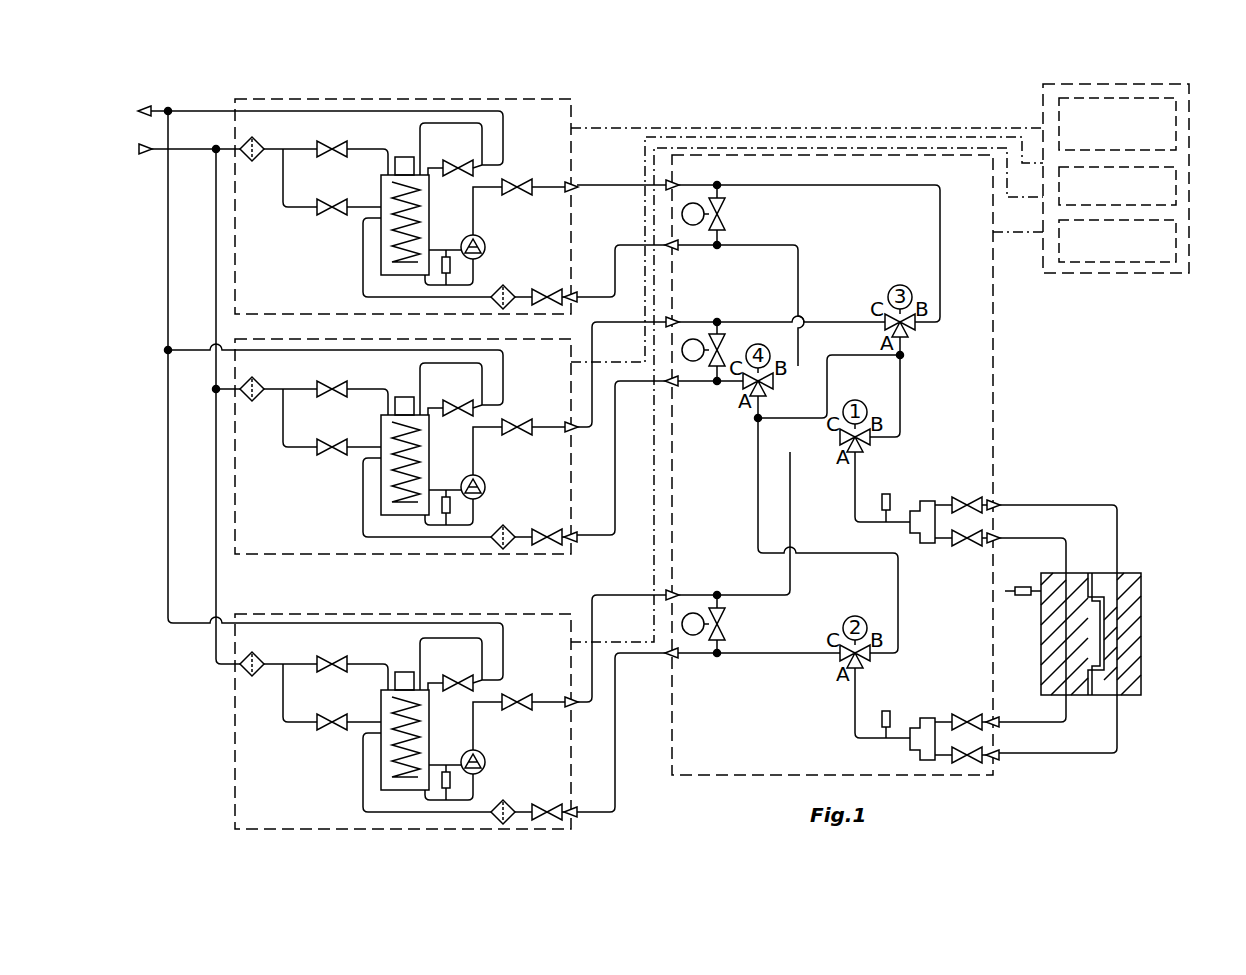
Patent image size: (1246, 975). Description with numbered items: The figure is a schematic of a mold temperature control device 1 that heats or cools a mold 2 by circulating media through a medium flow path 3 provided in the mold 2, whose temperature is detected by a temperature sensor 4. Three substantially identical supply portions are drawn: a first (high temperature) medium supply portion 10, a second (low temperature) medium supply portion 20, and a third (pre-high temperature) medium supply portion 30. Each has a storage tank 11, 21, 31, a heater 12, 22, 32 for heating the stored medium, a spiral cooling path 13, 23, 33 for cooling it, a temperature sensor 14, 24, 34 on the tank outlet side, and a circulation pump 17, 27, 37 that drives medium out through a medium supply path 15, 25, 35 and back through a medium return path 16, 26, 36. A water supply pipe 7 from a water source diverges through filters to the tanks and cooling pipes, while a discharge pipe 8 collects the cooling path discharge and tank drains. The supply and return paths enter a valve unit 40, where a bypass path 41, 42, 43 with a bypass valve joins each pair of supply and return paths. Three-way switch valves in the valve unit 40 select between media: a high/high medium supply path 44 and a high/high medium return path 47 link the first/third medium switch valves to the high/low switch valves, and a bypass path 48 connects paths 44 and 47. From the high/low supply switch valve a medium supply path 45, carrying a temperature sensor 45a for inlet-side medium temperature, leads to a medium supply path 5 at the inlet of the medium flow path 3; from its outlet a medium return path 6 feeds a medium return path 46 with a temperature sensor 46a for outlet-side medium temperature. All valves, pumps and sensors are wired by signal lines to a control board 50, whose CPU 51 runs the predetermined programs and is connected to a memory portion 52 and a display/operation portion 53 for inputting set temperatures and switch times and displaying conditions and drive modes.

The mold temperature control device 1 is at (192, 728).
The mold 2 is at (1157, 570).
The medium flow path 3 is at (1112, 697).
The temperature sensor 4 is at (1018, 598).
The medium supply path 5 is at (1027, 538).
The medium return path 6 is at (1027, 722).
The medium supply pipe line (water supply pipe) 7 is at (188, 154).
The medium discharge pipe line (discharge pipe) 8 is at (170, 124).
The first medium supply portion 10 is at (584, 97).
The storage tank 11 is at (332, 141).
The heater 12 is at (332, 199).
The cooling path 13 is at (458, 160).
The temperature sensor 14 is at (452, 265).
The medium supply path 15 is at (600, 185).
The medium return path 16 is at (602, 297).
The circulation pump 17 is at (485, 245).
The second medium supply portion 20 is at (445, 730).
The storage tank 21 is at (394, 708).
The heater 22 is at (365, 679).
The cooling path 23 is at (442, 731).
The temperature sensor 24 is at (477, 782).
The medium supply path 25 is at (610, 595).
The medium return path 26 is at (617, 760).
The circulation pump 27 is at (495, 747).
The third medium supply portion 30 is at (403, 472).
The storage tank 31 is at (394, 433).
The heater 32 is at (365, 404).
The cooling path 33 is at (442, 456).
The temperature sensor 34 is at (477, 507).
The medium supply path 35 is at (586, 429).
The medium return path 36 is at (600, 535).
The circulation pump 37 is at (495, 472).
The valve unit 40 is at (1010, 387).
The bypass path 41 is at (722, 190).
The bypass path 42 is at (722, 647).
The bypass path 43 is at (717, 376).
The high/high medium supply path 44 is at (903, 395).
The medium supply path 45 is at (855, 500).
The temperature sensor 45a is at (890, 494).
The medium return path 46 is at (855, 724).
The temperature sensor 46a is at (890, 711).
The high/high medium return path 47 is at (833, 555).
The bypass path 48 is at (860, 357).
The control board 50 is at (1123, 289).
The CPU 51 is at (1176, 127).
The memory portion 52 is at (1176, 188).
The display/operation portion 53 is at (1176, 242).